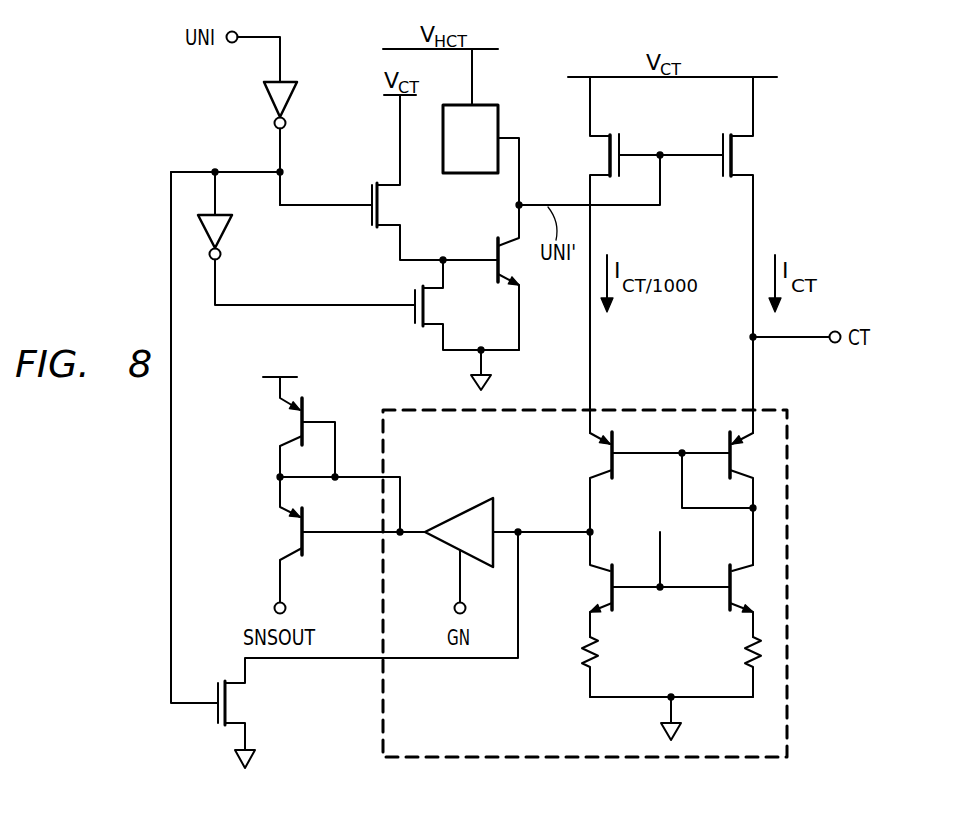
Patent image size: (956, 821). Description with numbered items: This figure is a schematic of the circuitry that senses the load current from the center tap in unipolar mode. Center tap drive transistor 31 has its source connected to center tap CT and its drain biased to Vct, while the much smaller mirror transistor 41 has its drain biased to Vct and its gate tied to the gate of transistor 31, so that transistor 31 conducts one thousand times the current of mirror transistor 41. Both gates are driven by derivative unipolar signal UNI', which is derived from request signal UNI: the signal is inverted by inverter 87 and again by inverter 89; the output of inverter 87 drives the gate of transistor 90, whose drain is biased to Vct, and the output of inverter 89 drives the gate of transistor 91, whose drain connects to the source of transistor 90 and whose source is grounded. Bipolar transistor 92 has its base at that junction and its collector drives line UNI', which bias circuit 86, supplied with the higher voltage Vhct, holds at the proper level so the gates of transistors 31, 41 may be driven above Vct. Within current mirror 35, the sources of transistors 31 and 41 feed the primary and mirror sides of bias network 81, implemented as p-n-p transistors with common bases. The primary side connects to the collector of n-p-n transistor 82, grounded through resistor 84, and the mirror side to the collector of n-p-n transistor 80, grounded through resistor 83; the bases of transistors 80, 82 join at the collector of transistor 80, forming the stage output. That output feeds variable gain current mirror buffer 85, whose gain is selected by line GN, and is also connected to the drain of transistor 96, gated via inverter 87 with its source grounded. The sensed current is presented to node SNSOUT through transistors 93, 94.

The center tap drive transistor 31 is at (722, 168).
The current mirror 35 is at (788, 598).
The mirror transistor 41 is at (621, 145).
The transistor 80 is at (616, 605).
The bias network 81 is at (616, 468).
The transistor 82 is at (727, 572).
The resistor 83 is at (582, 652).
The resistor 84 is at (745, 652).
The variable gain current mirror buffer 85 is at (462, 513).
The bias circuit 86 is at (500, 118).
The inverter 87 is at (262, 105).
The inverter 89 is at (228, 242).
The transistor 90 is at (370, 193).
The transistor 91 is at (413, 316).
The bipolar transistor 92 is at (494, 246).
The transistor 93 is at (305, 414).
The transistor 94 is at (305, 548).
The transistor 96 is at (215, 712).